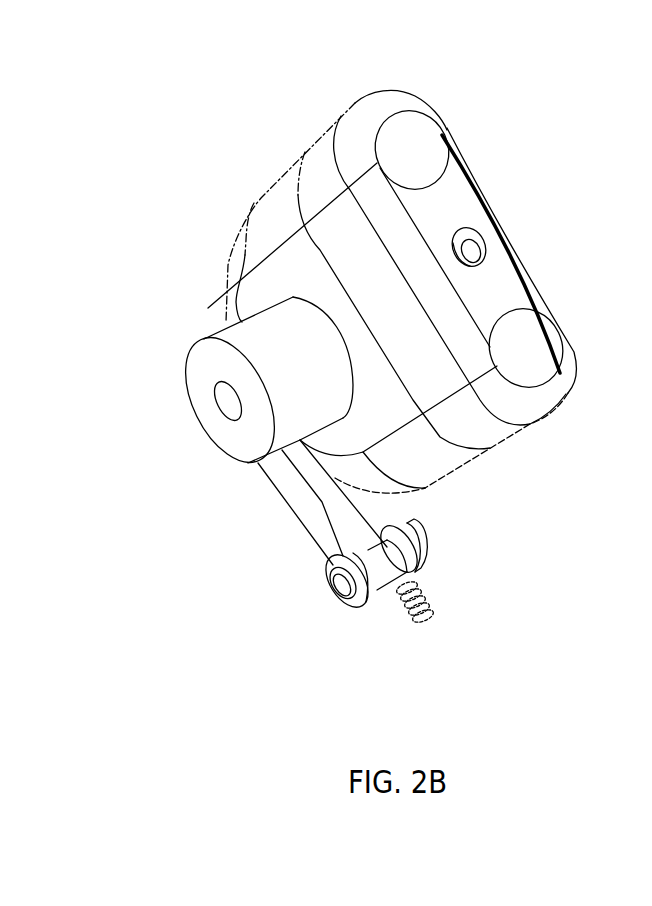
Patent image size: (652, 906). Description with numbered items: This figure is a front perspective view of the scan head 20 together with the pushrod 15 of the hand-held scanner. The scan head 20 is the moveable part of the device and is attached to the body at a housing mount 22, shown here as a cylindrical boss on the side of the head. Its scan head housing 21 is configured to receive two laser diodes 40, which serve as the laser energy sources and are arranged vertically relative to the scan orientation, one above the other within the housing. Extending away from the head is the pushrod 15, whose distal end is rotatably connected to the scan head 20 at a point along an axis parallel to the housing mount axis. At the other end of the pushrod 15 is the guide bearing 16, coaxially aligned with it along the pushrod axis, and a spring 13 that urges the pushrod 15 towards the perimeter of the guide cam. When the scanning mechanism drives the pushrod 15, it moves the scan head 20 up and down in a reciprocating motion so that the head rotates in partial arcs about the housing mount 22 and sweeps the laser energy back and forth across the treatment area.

The scan head 20 is at (519, 173).
The scan head housing 21 is at (366, 98).
The laser diodes 40 is at (410, 145).
The housing mount 22 is at (262, 340).
The pushrod 15 is at (285, 486).
The guide bearing 16 is at (328, 580).
The spring 13 is at (400, 605).